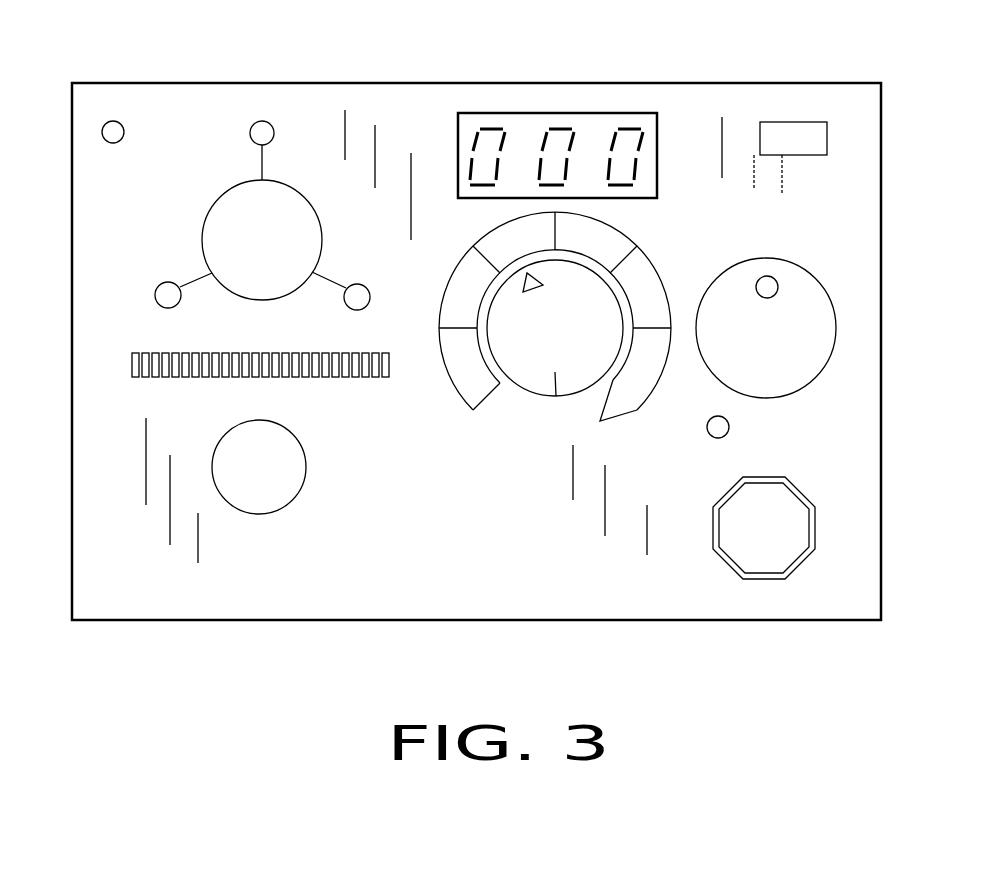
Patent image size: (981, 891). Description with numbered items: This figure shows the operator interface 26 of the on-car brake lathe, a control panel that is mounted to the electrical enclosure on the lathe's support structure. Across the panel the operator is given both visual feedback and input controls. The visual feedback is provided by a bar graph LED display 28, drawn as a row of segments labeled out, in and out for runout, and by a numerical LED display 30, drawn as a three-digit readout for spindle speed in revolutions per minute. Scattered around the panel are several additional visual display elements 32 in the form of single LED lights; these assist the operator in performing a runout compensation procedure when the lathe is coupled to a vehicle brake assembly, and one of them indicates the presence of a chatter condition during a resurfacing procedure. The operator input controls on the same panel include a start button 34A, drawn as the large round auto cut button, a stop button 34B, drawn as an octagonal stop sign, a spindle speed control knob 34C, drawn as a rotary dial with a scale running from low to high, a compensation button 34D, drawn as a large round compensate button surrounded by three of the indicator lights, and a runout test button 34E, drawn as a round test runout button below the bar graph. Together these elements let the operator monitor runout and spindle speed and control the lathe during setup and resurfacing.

The operator interface 26 is at (177, 622).
The bar graph LED display 28 is at (164, 385).
The numerical LED display 30 is at (596, 111).
The visual display elements 32 is at (121, 124).
The start button 34A is at (835, 313).
The stop button 34B is at (768, 579).
The spindle speed control knob 34C is at (528, 393).
The compensation button 34D is at (197, 243).
The runout test button 34E is at (273, 510).